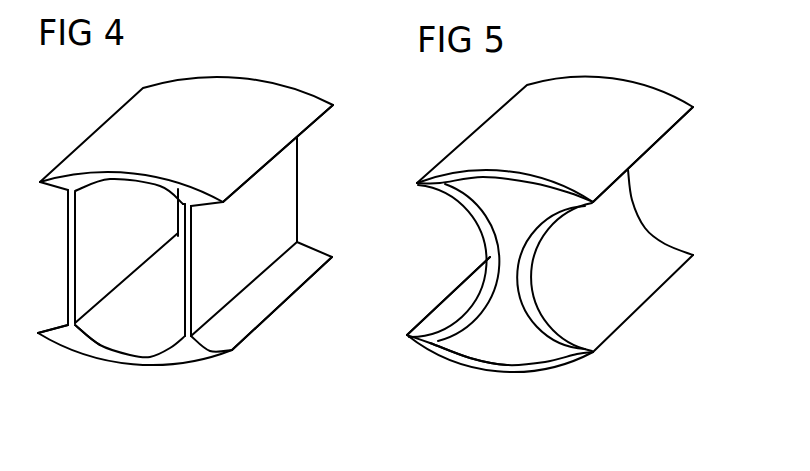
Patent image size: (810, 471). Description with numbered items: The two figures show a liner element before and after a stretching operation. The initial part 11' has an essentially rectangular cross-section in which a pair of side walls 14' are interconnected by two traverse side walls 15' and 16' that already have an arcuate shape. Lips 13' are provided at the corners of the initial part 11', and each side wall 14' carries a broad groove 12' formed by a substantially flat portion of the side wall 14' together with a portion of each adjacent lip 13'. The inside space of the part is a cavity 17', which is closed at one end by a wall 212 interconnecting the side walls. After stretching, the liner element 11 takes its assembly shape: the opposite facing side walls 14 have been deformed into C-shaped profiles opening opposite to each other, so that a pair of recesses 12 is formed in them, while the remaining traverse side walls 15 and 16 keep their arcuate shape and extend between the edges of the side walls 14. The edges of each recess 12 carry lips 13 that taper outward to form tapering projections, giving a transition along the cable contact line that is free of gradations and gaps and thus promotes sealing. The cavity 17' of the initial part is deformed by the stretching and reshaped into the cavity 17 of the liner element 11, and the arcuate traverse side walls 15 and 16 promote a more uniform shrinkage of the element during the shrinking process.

In FIG. 5, the liner element 11 is at (555, 166).
In FIG. 4, the initial part 11' is at (191, 213).
In FIG. 5, the recess 12 is at (550, 298).
In FIG. 4, the broad groove 12' is at (321, 189).
In FIG. 5, the lip 13 is at (544, 221).
In FIG. 4, the lip 13' is at (280, 218).
In FIG. 5, the side wall 14 is at (500, 267).
In FIG. 4, the side wall 14' is at (182, 262).
In FIG. 5, the traverse side wall 15 is at (517, 117).
In FIG. 4, the traverse side wall 15' is at (142, 119).
In FIG. 5, the traverse side wall 16 is at (500, 374).
In FIG. 4, the traverse side wall 16' is at (135, 366).
In FIG. 5, the cavity 17 is at (468, 378).
In FIG. 4, the cavity 17' is at (69, 366).
In FIG. 4, the wall 212 is at (181, 203).